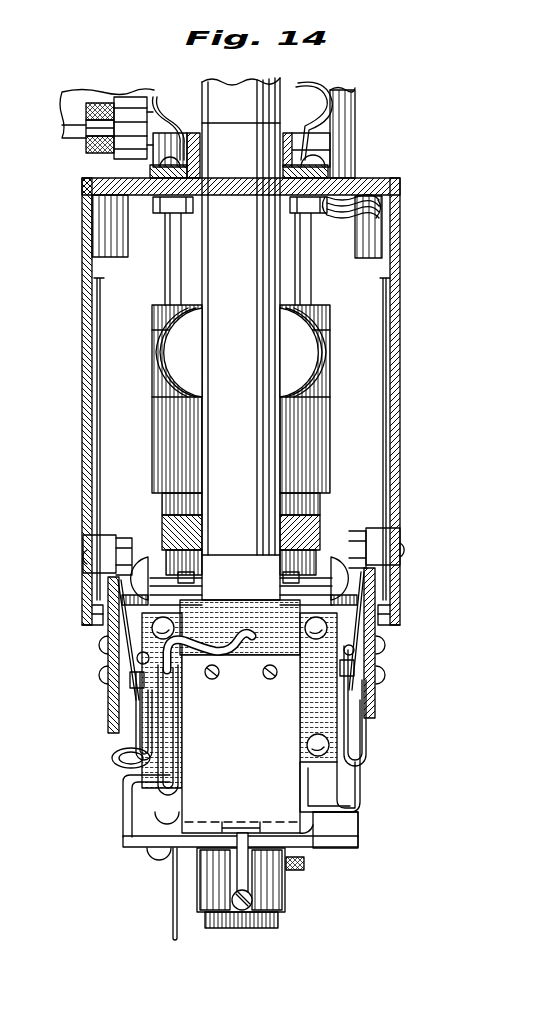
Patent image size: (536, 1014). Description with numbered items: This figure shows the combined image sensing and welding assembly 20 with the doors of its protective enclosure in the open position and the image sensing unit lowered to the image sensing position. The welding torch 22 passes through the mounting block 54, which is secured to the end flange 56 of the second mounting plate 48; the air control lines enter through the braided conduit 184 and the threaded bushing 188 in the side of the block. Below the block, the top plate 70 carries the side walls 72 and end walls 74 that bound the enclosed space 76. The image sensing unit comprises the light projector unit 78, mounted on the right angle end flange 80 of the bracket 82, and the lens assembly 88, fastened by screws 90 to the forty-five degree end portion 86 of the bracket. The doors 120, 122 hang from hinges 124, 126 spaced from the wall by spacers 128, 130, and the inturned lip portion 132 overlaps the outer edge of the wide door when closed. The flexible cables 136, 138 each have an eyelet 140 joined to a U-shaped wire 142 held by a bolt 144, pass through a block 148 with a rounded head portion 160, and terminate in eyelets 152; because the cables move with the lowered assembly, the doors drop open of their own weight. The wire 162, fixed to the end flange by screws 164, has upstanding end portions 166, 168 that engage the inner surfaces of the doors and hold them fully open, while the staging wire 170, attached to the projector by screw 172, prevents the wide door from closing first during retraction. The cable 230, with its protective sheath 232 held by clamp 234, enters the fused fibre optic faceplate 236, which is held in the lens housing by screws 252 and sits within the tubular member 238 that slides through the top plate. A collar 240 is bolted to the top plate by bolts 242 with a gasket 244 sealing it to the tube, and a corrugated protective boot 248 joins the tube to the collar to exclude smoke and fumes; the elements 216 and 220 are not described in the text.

The combined image sensing and welding assembly 20 is at (432, 84).
The welding torch 22 is at (276, 430).
The second mounting plate 48 is at (77, 97).
The mounting block 54 is at (343, 93).
The end flange 56 is at (130, 91).
The top plate 70 is at (396, 186).
The side walls 72 is at (82, 394).
The end walls 74 is at (370, 424).
The enclosed space 76 is at (138, 359).
The light projector unit 78 is at (292, 899).
The right angle end flange 80 is at (356, 840).
The bracket 82 is at (346, 768).
The 45 degree end portion 86 is at (374, 634).
The lens assembly 88 is at (250, 803).
The screws 90 is at (308, 622).
The door 120 is at (110, 584).
The door 122 is at (378, 581).
The hinge 124 is at (92, 556).
The hinge 126 is at (404, 550).
The spacer 128 is at (100, 542).
The spacer 130 is at (384, 538).
The inturned lip portion 132 is at (102, 626).
The flexible cable 136 is at (368, 746).
The flexible cable 138 is at (122, 767).
The eyelet 140 is at (140, 690).
The U-shaped wire 142 is at (140, 663).
The bolt 144 is at (112, 680).
The block 148 is at (133, 607).
The eyelets 152 is at (290, 588).
The rounded head portions 160 is at (140, 557).
The wire 162 is at (342, 813).
The screws 164 is at (168, 838).
The upstanding end portion 166 is at (121, 784).
The upstanding end portion 168 is at (362, 791).
The staging wire 170 is at (173, 918).
The screw 172 is at (158, 862).
The braided conduit 184 is at (92, 152).
The threaded bushing 188 is at (88, 136).
The wire bundle 216 is at (378, 202).
The column 220 is at (368, 221).
The cable 230 is at (160, 647).
The protective sheath 232 is at (167, 812).
The clamp 234 is at (150, 731).
The fused fibre optic faceplate 236 is at (247, 560).
The tubular member 238 is at (225, 88).
The collar 240 is at (300, 152).
The bolts 242 is at (153, 97).
The gasket 244 is at (312, 148).
The corrugated protective boot 248 is at (321, 90).
The screws 252 is at (268, 681).